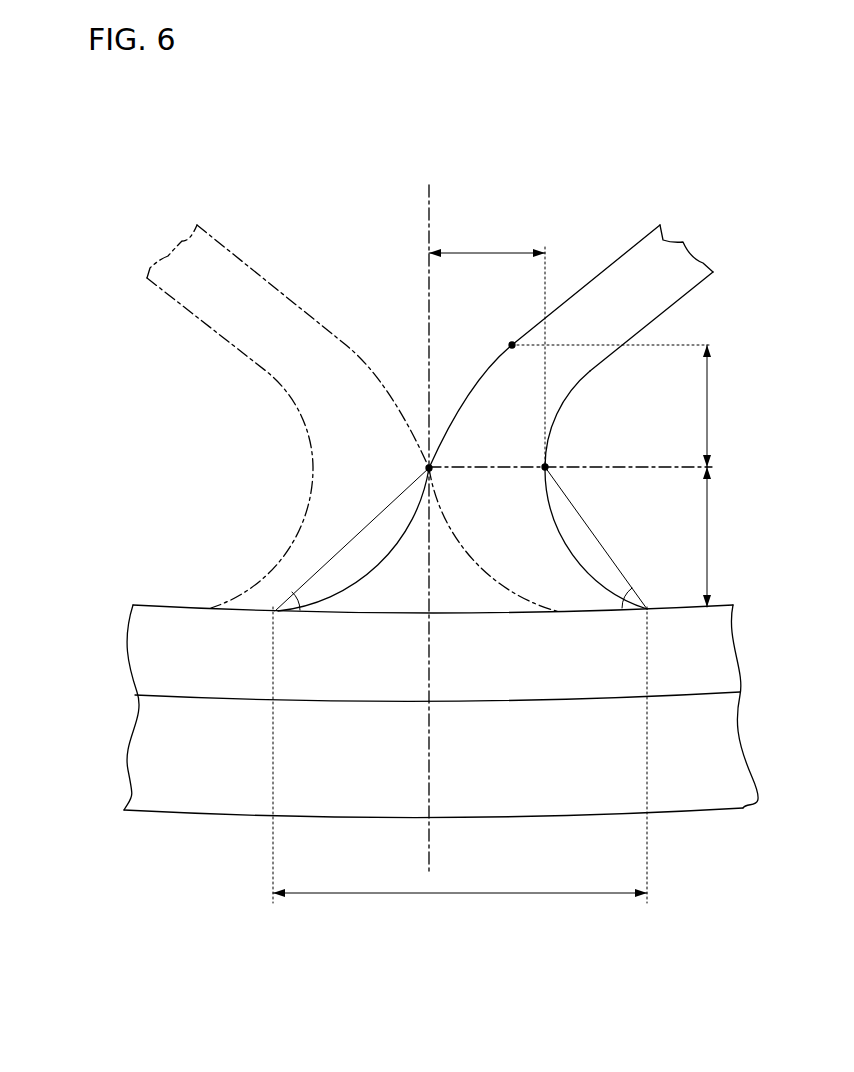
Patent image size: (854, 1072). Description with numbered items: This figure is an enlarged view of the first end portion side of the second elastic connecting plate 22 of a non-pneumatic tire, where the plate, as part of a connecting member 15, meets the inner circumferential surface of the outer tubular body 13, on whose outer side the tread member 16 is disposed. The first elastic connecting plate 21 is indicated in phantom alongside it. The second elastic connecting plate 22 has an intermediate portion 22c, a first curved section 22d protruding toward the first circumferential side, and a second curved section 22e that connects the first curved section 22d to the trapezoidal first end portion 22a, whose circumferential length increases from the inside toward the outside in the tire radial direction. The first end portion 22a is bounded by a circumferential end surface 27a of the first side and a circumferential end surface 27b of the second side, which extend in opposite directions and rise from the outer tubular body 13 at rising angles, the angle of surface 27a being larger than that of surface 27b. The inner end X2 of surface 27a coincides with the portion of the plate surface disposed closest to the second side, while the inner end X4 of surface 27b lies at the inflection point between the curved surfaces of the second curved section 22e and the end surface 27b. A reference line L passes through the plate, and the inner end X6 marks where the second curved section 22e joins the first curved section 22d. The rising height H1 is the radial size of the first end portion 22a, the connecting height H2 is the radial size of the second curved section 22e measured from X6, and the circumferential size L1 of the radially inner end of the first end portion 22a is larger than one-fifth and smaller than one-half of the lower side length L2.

The outer tubular body 13 is at (176, 698).
The connecting member 15 is at (540, 150).
The tread member 16 is at (171, 800).
The first elastic connecting plate 21 is at (243, 262).
The second elastic connecting plate 22 is at (616, 257).
The intermediate portion 22c is at (612, 298).
The first curved section 22d is at (610, 265).
The first end portion 22a is at (560, 527).
The second curved section 22e is at (465, 393).
The circumferential end surface of the first side 27a is at (567, 548).
The circumferential end surface of the second side 27b is at (390, 547).
The center line L is at (430, 222).
The size in the tire circumferential direction of the inner end of the first end por L1 is at (487, 341).
The lower side length L2 is at (460, 771).
The rising height H1 is at (725, 537).
The connecting height H2 is at (587, 406).
The inner end of the circumferential end surface of the first side X2 is at (545, 467).
The inner end of the circumferential end surface of the second side X4 is at (429, 468).
The inner end of the circumferential end surface of the second side of the second cu X6 is at (512, 345).